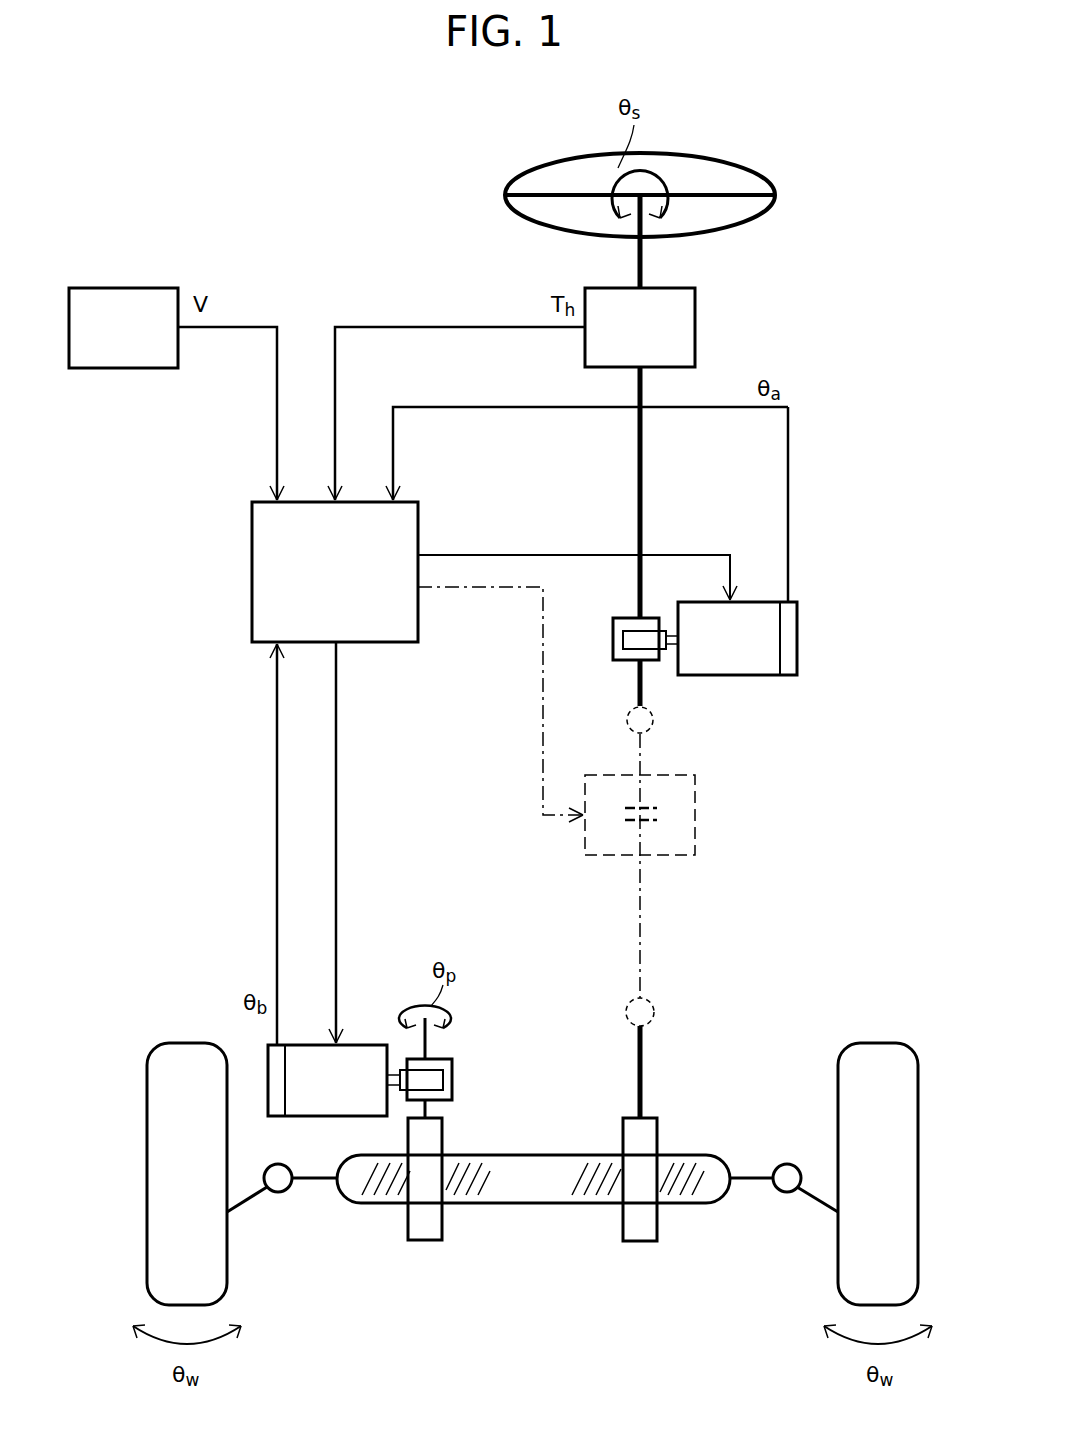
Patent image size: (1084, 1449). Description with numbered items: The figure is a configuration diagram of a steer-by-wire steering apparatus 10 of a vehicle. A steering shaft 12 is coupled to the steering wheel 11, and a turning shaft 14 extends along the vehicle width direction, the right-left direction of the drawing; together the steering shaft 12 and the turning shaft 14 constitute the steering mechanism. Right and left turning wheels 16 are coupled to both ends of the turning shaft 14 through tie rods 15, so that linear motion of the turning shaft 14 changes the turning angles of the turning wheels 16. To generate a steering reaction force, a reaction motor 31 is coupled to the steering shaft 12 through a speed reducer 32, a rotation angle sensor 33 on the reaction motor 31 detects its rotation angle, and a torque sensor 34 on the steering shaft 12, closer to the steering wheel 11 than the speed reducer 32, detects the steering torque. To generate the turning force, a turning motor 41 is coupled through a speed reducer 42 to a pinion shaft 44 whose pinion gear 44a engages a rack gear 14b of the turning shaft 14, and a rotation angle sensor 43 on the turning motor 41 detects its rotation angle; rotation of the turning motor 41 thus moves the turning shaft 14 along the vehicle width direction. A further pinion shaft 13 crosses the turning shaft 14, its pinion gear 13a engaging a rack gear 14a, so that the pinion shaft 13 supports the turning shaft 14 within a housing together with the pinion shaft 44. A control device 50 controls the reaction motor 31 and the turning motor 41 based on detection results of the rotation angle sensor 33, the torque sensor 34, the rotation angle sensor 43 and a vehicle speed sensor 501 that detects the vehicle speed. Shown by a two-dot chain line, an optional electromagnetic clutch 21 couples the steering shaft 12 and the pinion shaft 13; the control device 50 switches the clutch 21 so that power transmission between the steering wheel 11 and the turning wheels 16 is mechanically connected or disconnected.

The steering apparatus 10 is at (805, 152).
The steering wheel 11 is at (724, 155).
The steering shaft 12 is at (643, 258).
The pinion shaft 13 is at (637, 1081).
The pinion gear 13a is at (640, 1243).
The turning shaft 14 is at (528, 1205).
The rack gear 14a is at (592, 1192).
The rack gear 14b is at (457, 1192).
The tie rod 15 is at (306, 1190).
The turning wheel 16 is at (228, 1268).
The clutch 21 is at (697, 823).
The reaction motor 31 is at (760, 677).
The speed reducer 32 is at (609, 621).
The rotation angle sensor 33 is at (790, 678).
The torque sensor 34 is at (695, 328).
The turning motor 41 is at (366, 1044).
The speed reducer 42 is at (467, 1090).
The rotation angle sensor 43 is at (267, 1098).
The pinion shaft 44 is at (429, 1045).
The pinion gear 44a is at (425, 1243).
The control device 50 is at (408, 643).
The vehicle speed sensor 501 is at (124, 287).